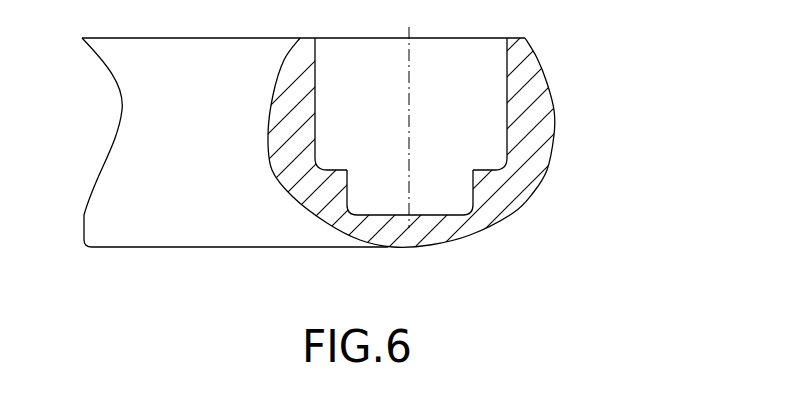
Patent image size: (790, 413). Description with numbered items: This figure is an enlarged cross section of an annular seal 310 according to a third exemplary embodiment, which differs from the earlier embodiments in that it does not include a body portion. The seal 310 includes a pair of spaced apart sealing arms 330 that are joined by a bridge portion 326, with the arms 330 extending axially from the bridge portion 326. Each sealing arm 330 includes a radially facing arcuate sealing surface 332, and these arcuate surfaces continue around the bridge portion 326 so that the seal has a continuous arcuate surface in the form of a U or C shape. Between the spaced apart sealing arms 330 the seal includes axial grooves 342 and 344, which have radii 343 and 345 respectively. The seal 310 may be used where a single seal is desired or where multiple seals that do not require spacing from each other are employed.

The annular seal 310 is at (364, 130).
The bridge portion 326 is at (420, 251).
The sealing arm 330 is at (439, 131).
The arcuate sealing surface 332 is at (408, 130).
The axial groove 342 is at (411, 114).
The radius 343 is at (411, 144).
The axial groove 344 is at (411, 141).
The radius 345 is at (410, 192).